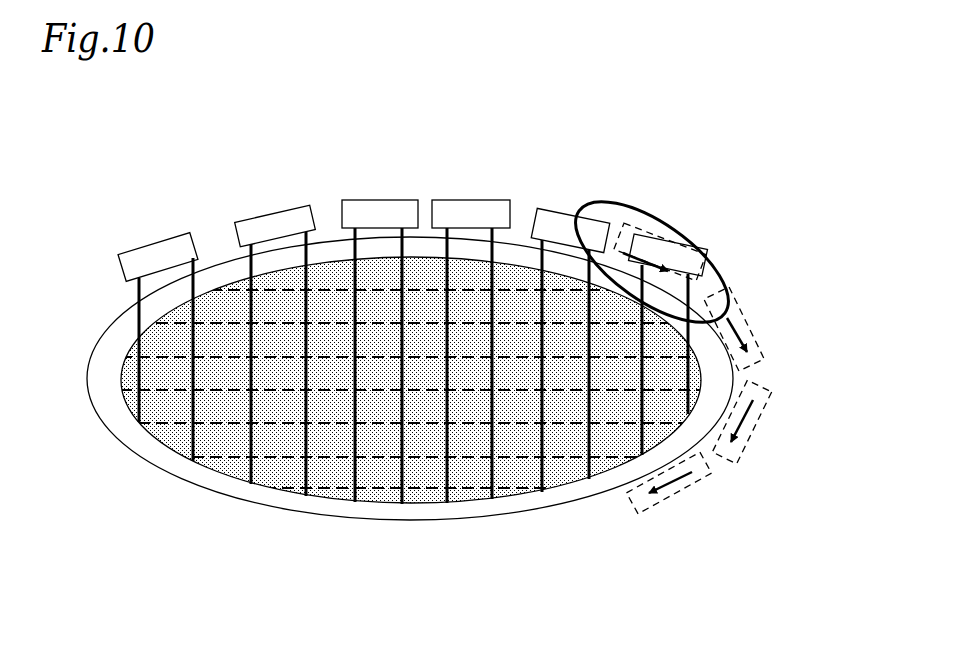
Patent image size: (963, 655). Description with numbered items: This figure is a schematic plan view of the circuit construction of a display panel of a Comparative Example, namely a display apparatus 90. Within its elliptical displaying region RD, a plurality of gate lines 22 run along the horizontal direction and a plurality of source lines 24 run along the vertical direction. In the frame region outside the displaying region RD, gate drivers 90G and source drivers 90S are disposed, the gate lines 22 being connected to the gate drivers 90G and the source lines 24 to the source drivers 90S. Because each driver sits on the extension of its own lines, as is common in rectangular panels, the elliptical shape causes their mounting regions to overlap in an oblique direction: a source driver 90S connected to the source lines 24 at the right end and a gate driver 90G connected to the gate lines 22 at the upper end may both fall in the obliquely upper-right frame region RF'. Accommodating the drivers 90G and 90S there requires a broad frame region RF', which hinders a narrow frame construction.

The display apparatus 90 is at (712, 173).
The source drivers 90S is at (497, 200).
The gate drivers 90G is at (757, 424).
The obliquely upper-right frame region RF' is at (682, 262).
The displaying region RD is at (325, 447).
The source lines 24 is at (360, 442).
The gate lines 22 is at (572, 397).